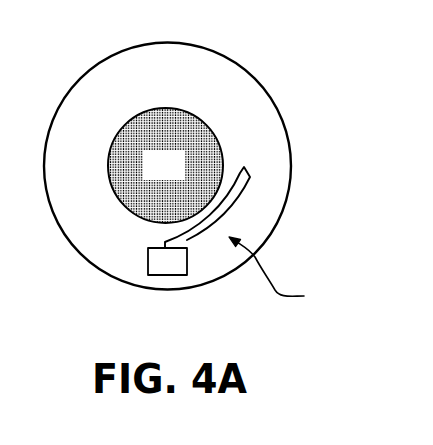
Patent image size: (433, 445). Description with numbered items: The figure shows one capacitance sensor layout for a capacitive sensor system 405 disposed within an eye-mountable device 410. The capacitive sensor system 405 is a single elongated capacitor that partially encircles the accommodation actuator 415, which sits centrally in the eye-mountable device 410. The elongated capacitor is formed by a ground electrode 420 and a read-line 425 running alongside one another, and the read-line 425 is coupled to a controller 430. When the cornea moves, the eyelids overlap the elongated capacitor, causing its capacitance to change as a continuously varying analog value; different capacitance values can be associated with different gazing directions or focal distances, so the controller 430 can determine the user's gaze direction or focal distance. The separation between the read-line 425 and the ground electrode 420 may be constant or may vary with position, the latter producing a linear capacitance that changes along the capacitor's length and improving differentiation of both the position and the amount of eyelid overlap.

The capacitive sensor system 405 is at (286, 271).
The eye-mountable device 410 is at (228, 60).
The accommodation actuator 415 is at (183, 178).
The ground electrode 420 is at (248, 180).
The read-line 425 is at (244, 169).
The controller 430 is at (148, 261).